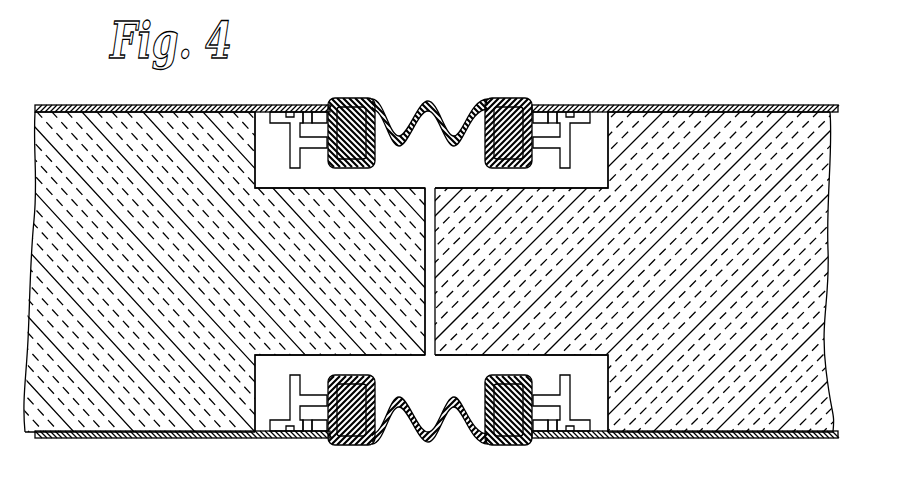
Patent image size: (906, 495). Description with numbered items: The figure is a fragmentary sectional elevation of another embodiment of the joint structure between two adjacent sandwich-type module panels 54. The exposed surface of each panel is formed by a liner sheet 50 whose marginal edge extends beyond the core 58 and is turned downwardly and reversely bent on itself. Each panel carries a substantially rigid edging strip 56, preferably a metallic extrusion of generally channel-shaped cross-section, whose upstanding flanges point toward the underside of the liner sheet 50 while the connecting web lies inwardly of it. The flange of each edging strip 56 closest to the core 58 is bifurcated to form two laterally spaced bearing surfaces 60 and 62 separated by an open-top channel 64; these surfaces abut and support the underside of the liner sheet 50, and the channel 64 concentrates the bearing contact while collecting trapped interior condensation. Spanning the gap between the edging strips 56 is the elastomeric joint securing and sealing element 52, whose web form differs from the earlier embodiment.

The liner sheet 50 is at (72, 103).
The elastomeric joint securing and sealing element 52 is at (444, 98).
The module panel 54 is at (789, 101).
The edging strip 56 is at (292, 143).
The core 58 is at (647, 193).
The bearing surface 60 is at (543, 110).
The bearing surface 62 is at (290, 112).
The open-top channel 64 is at (312, 118).